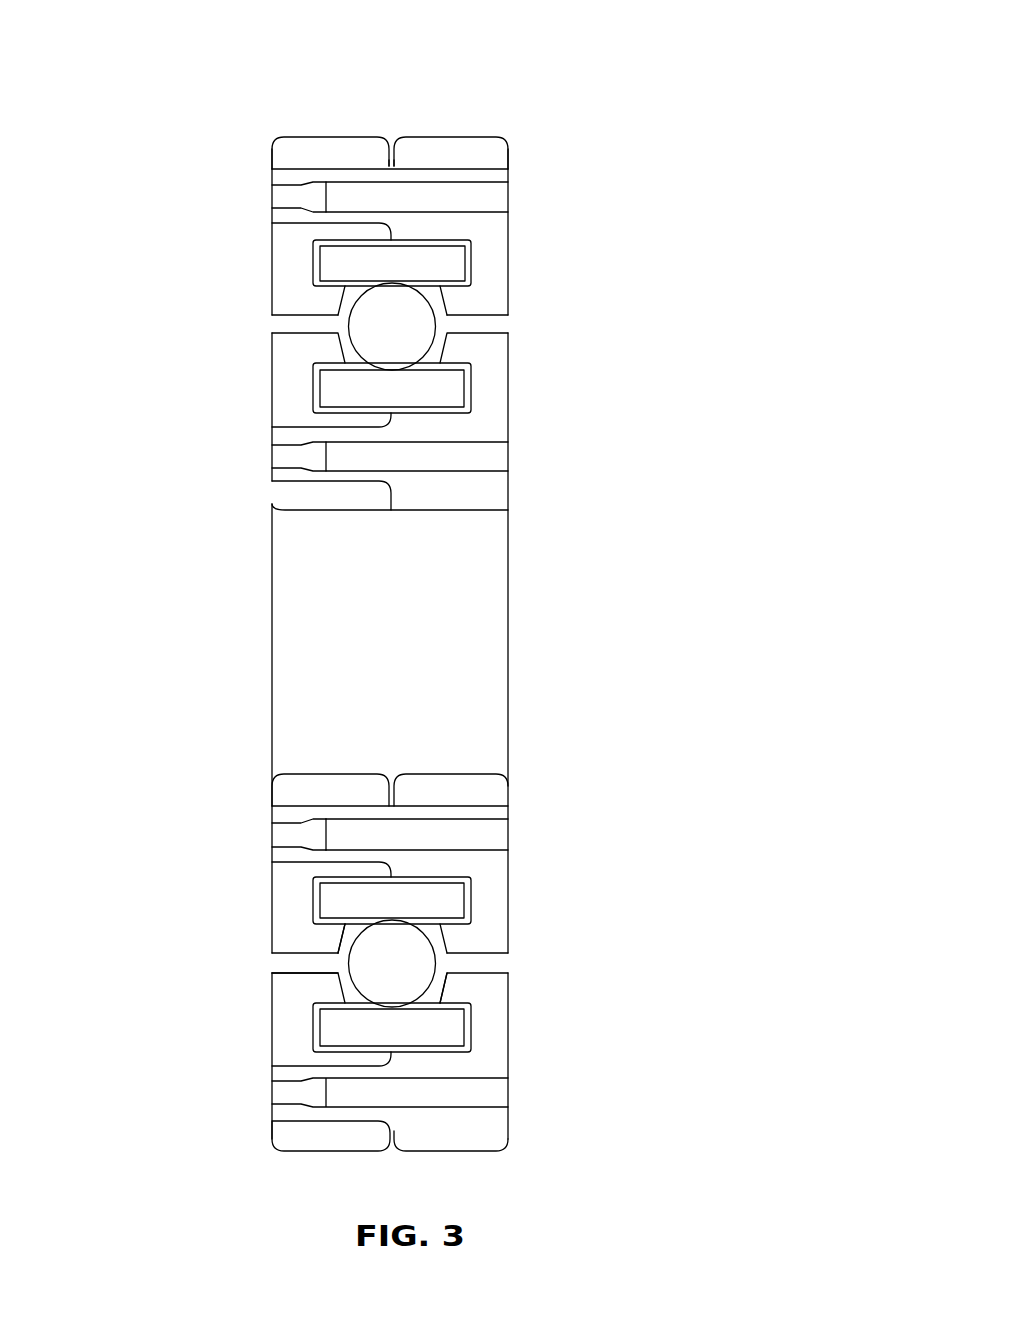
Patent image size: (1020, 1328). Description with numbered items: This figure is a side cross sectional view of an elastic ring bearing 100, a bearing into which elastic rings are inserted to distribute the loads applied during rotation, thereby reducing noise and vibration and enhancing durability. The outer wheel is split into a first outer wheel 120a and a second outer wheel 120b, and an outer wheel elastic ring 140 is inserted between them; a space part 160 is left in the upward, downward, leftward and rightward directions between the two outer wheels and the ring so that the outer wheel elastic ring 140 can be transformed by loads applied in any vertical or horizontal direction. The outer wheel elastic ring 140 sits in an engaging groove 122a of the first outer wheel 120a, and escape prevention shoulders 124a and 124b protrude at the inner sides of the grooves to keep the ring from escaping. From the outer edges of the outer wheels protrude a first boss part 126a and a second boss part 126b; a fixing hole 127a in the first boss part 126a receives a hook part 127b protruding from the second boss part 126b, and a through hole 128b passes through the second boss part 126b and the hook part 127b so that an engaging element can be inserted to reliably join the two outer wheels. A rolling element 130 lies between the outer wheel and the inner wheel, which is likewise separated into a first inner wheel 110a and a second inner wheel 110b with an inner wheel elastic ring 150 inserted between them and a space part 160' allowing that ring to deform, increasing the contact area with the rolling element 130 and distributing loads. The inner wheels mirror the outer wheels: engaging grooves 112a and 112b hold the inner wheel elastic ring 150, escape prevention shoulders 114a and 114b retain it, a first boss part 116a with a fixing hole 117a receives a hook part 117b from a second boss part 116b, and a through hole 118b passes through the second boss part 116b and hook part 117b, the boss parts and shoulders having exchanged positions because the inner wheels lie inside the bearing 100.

The elastic ring bearing 100 is at (656, 56).
The first inner wheel 110a is at (280, 390).
The second inner wheel 110b is at (492, 415).
The engaging groove 112a is at (332, 905).
The engaging groove 112b is at (478, 905).
The escape prevention shoulder 114a is at (290, 972).
The escape prevention shoulder 114b is at (455, 938).
The first boss part 116a is at (297, 794).
The second boss part 116b is at (448, 790).
The fixing hole 117a is at (285, 813).
The hook part 117b is at (353, 812).
The through hole 118b is at (490, 837).
The first outer wheel 120a is at (290, 258).
The second outer wheel 120b is at (492, 272).
The engaging groove 122a is at (313, 275).
The escape prevention shoulder 124a is at (337, 289).
The escape prevention shoulder 124b is at (455, 290).
The first boss part 126a is at (375, 152).
The second boss part 126b is at (435, 158).
The fixing hole 127a is at (296, 168).
The hook part 127b is at (393, 163).
The through hole 128b is at (492, 197).
The rolling element 130 is at (408, 352).
The outer wheel elastic ring 140 is at (345, 253).
The inner wheel elastic ring 150 is at (345, 387).
The space part 160 is at (491, 237).
The space part 160' is at (544, 896).